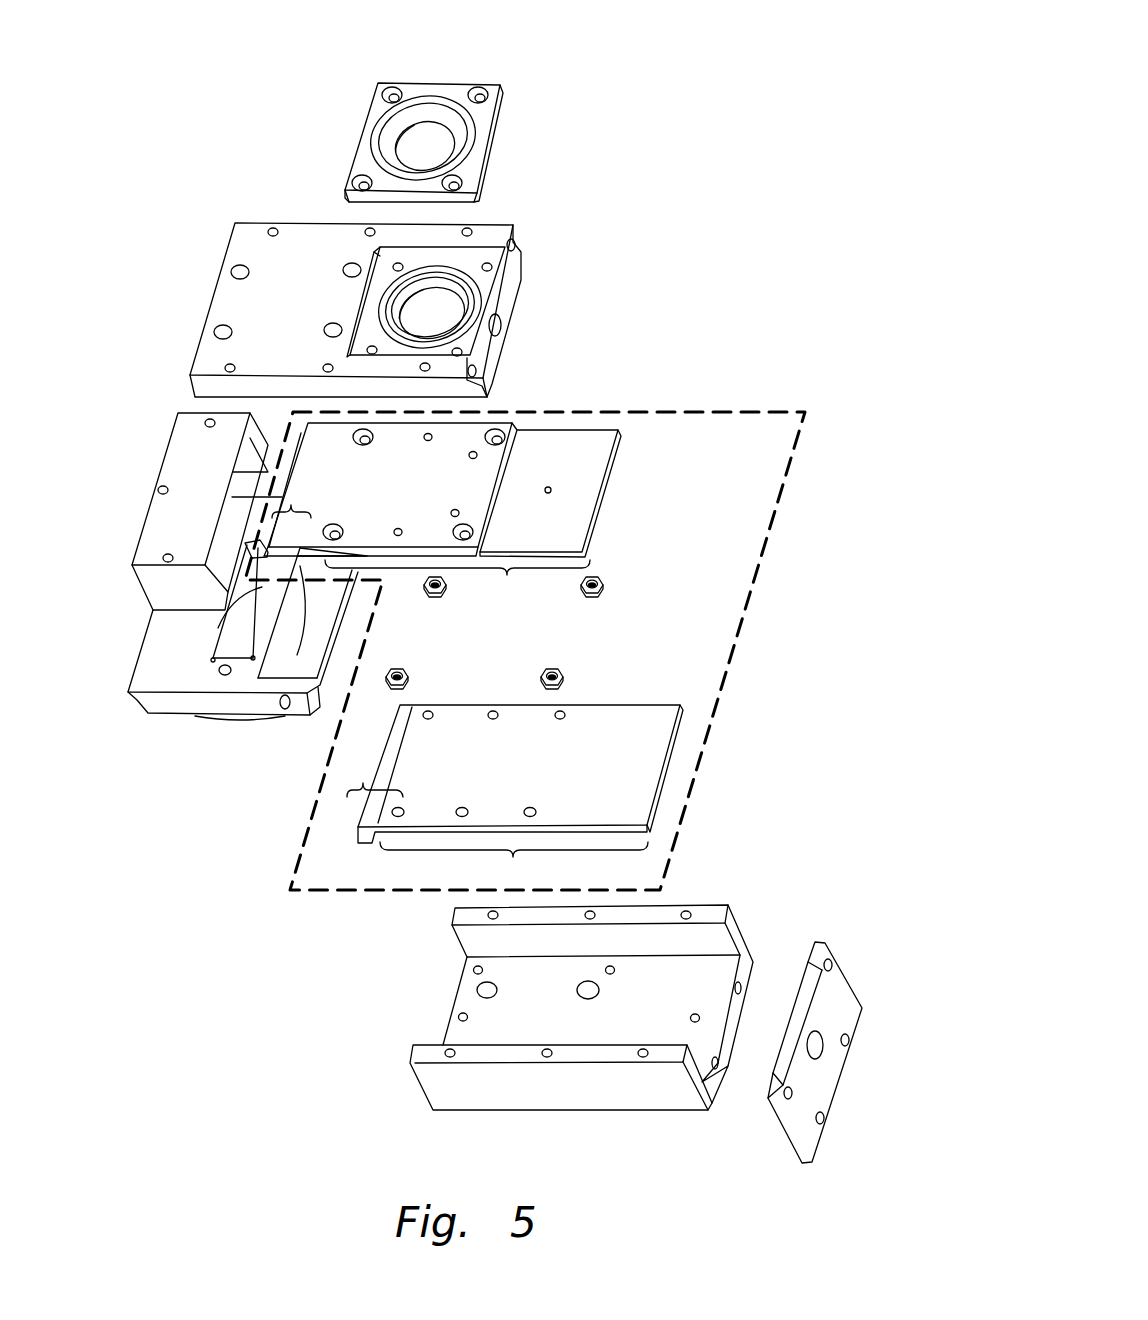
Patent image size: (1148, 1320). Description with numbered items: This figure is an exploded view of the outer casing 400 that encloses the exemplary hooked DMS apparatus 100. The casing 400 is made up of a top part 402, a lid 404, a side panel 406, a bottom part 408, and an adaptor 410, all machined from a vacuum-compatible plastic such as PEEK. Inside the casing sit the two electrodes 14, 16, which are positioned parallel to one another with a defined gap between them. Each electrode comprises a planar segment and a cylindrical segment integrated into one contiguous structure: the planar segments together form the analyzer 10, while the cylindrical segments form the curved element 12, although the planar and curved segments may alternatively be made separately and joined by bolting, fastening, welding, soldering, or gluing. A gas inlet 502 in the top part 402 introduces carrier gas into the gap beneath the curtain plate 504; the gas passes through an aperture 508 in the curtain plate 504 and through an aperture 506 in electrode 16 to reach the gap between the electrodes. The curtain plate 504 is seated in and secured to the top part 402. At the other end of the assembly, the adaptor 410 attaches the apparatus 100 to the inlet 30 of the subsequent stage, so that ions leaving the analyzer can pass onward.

The outer casing 400 is at (715, 72).
The curtain plate 504 is at (487, 145).
The aperture 508 is at (432, 157).
The top part 402 is at (235, 300).
The gas inlet 502 is at (505, 325).
The lid 404 is at (187, 460).
The adaptor 410 is at (172, 658).
The inlet 30 is at (250, 630).
The hooked DMS apparatus 100 is at (738, 640).
The electrode 16 is at (528, 455).
The aperture 506 is at (548, 488).
The electrode 14 is at (603, 732).
The element 12 is at (337, 634).
The analyzer 10 is at (486, 723).
The bottom part 408 is at (472, 1005).
The side panel 406 is at (833, 998).